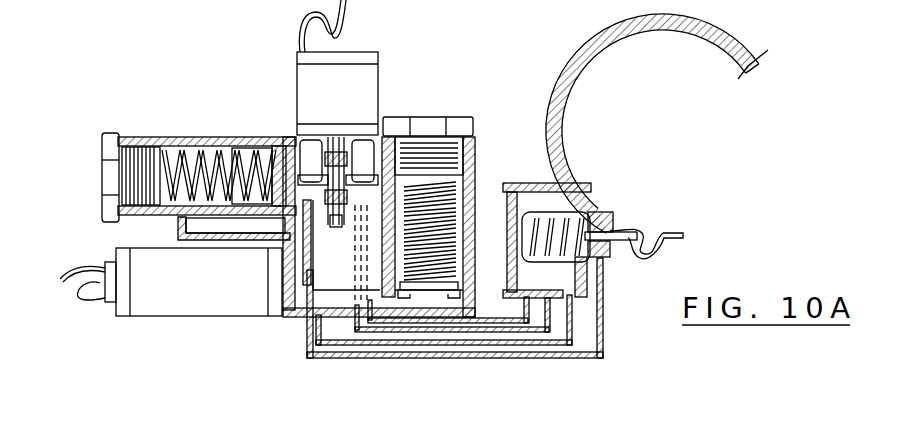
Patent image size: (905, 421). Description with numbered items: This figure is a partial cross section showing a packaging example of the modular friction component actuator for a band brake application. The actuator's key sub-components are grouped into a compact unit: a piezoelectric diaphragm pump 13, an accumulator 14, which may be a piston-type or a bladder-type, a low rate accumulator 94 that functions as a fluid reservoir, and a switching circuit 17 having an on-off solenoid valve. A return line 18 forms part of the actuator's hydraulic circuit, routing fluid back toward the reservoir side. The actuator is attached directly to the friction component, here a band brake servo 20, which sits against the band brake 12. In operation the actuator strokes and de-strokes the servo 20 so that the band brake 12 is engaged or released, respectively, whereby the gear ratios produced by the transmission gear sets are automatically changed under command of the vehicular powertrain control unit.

The band brake 12 is at (552, 88).
The piezoelectric diaphragm pump 13 is at (97, 253).
The accumulator 14 is at (178, 137).
The switching circuit 17 is at (378, 83).
The return line 18 is at (583, 358).
The band brake servo 20 is at (530, 184).
The low rate accumulator 94 is at (478, 141).